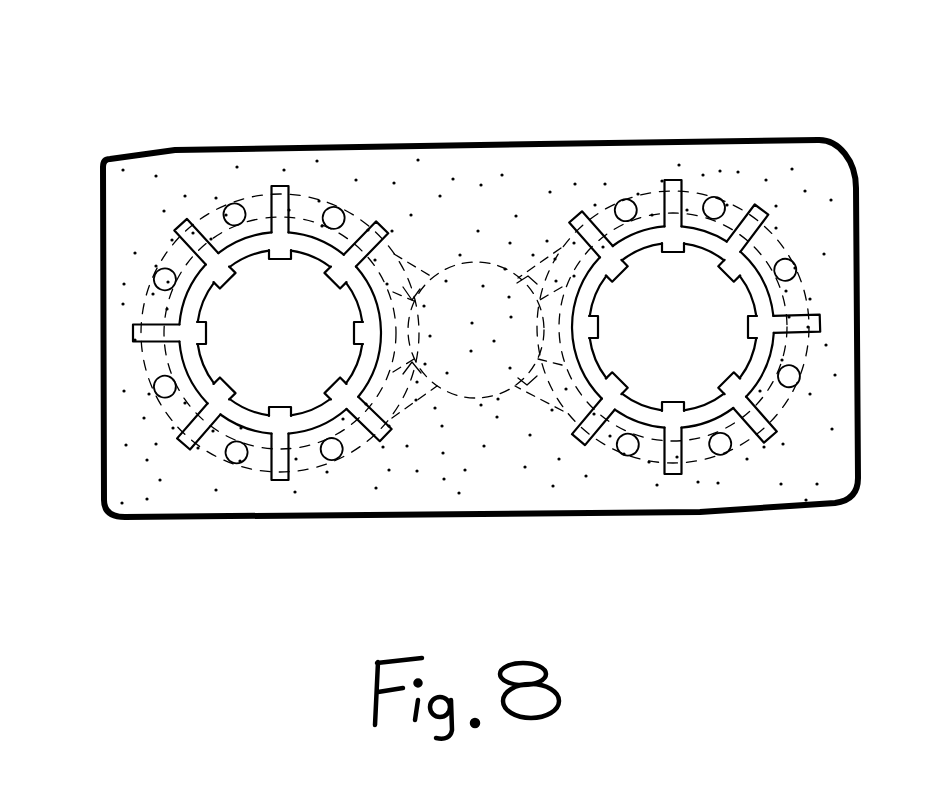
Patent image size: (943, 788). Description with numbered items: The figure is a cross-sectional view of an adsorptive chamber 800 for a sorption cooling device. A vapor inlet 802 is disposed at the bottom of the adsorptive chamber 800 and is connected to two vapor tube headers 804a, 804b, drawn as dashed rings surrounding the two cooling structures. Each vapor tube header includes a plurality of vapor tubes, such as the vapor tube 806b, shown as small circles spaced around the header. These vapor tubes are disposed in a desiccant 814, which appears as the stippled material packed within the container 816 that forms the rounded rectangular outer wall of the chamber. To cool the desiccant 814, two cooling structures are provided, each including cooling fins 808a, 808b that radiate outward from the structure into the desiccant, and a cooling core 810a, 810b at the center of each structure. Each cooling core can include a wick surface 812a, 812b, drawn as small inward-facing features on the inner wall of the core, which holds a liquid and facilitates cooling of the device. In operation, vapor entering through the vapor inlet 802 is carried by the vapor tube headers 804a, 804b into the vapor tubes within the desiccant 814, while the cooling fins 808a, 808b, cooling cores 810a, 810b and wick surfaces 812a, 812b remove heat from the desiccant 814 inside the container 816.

The adsorptive chamber 800 is at (473, 97).
The vapor inlet 802 is at (478, 398).
The vapor tube header 804a is at (303, 333).
The vapor tube header 804b is at (673, 343).
The vapor tube 806b is at (707, 311).
The cooling fin 808a is at (210, 333).
The cooling fin 808b is at (689, 319).
The cooling core 810a is at (280, 332).
The cooling core 810b is at (673, 326).
The wick surface 812a is at (280, 333).
The wick surface 812b is at (673, 327).
The desiccant 814 is at (363, 495).
The container 816 is at (210, 523).